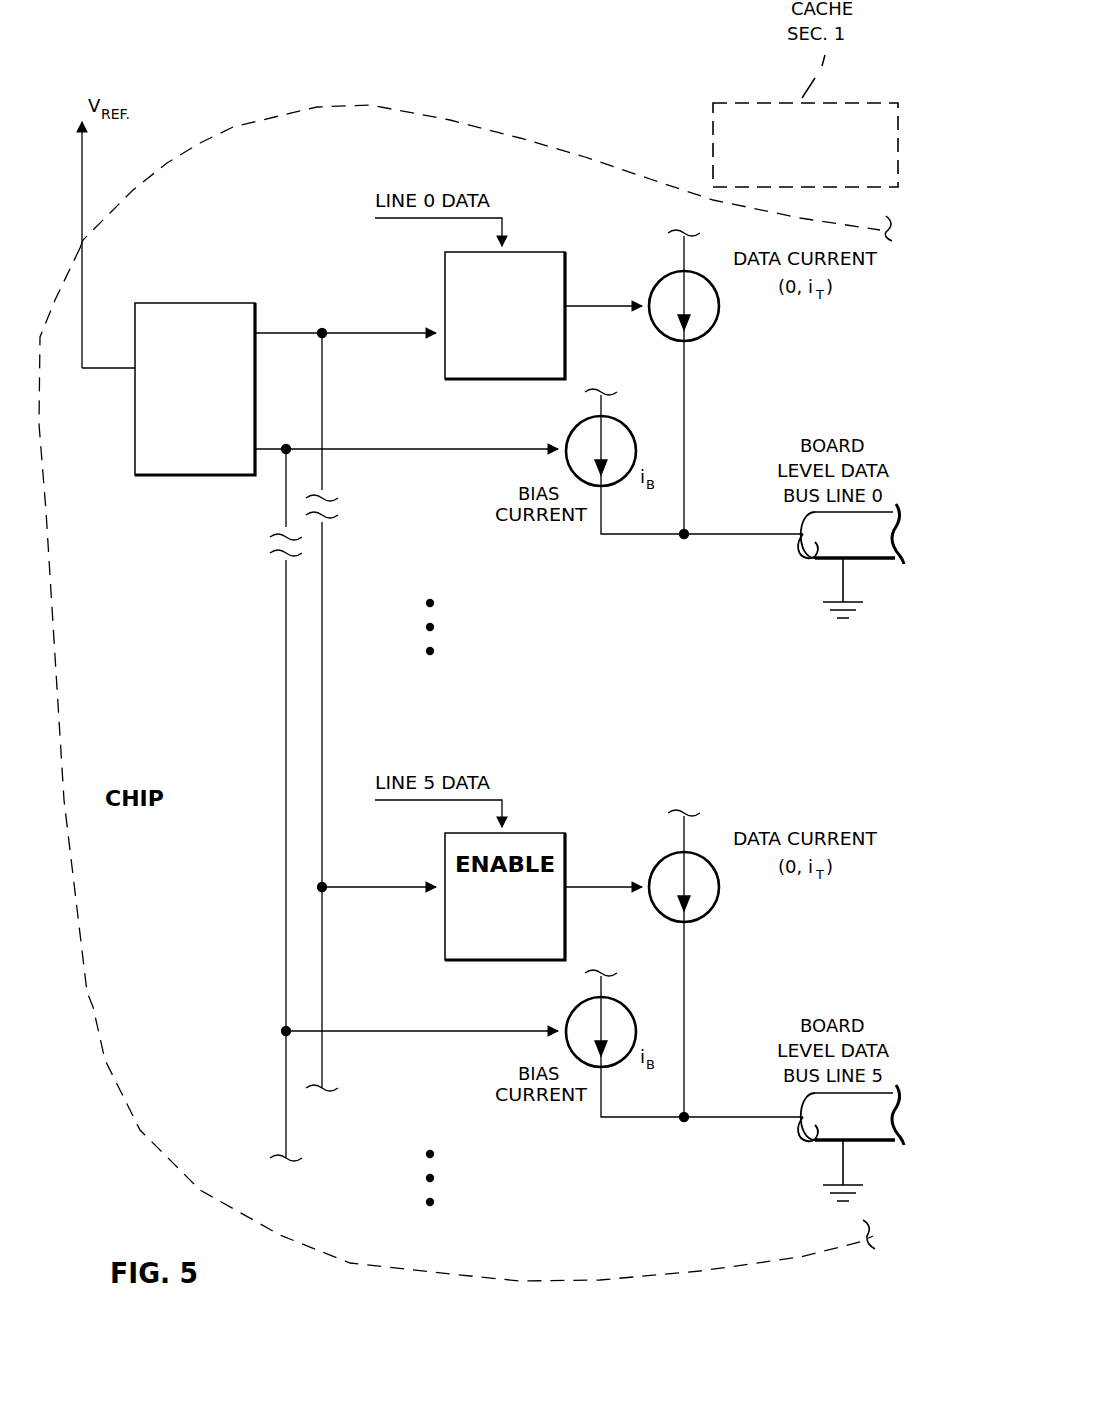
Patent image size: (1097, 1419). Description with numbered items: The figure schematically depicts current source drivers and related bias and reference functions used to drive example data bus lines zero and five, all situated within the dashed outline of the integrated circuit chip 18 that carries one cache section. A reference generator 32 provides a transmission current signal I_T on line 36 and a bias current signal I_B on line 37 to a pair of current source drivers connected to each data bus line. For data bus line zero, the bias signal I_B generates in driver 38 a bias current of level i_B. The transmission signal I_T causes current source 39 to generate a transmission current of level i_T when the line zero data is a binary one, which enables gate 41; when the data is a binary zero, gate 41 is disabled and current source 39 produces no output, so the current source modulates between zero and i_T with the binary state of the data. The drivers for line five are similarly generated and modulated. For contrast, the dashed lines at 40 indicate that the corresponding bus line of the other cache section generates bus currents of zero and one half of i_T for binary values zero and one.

The integrated circuit chip 18 is at (103, 1060).
The reference generator 32 is at (237, 452).
The line 36 is at (290, 332).
The line 37 is at (285, 490).
The driver 38 is at (630, 426).
The current source 39 is at (660, 284).
The dashed lines 40 is at (698, 126).
The gate 41 is at (547, 356).